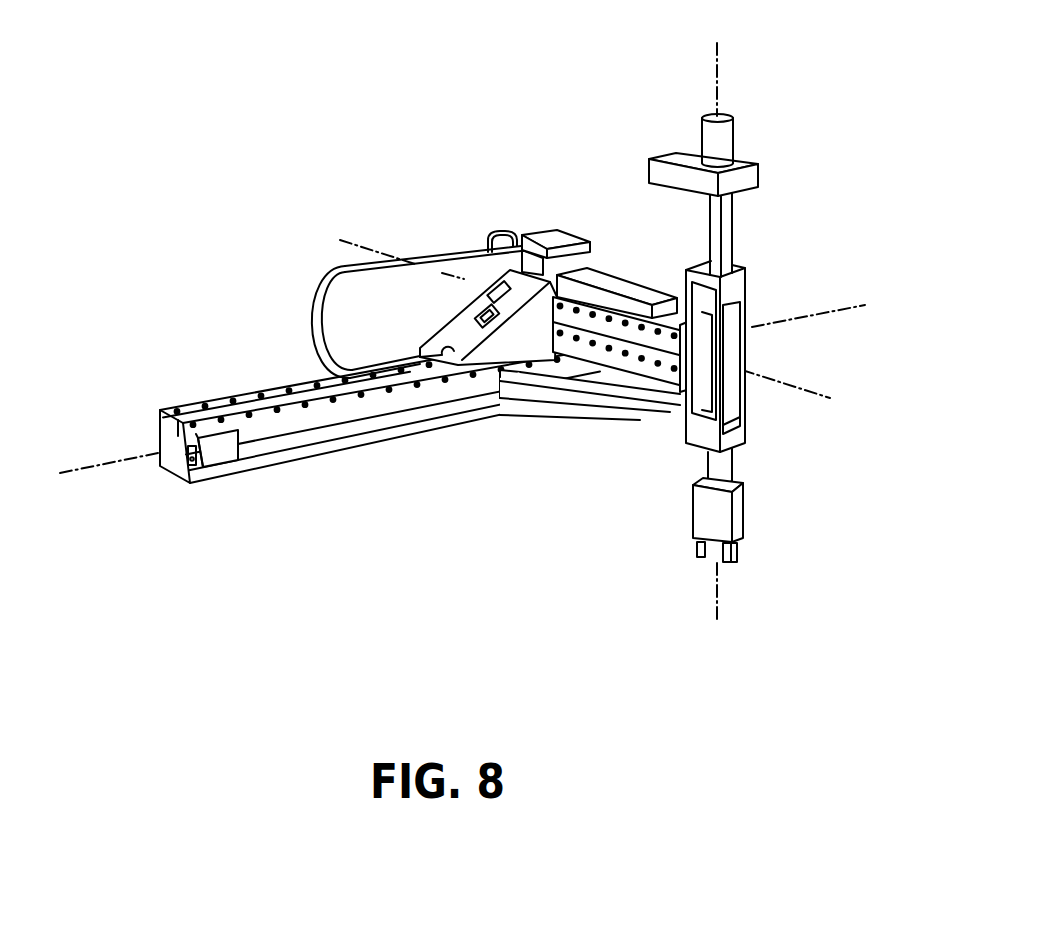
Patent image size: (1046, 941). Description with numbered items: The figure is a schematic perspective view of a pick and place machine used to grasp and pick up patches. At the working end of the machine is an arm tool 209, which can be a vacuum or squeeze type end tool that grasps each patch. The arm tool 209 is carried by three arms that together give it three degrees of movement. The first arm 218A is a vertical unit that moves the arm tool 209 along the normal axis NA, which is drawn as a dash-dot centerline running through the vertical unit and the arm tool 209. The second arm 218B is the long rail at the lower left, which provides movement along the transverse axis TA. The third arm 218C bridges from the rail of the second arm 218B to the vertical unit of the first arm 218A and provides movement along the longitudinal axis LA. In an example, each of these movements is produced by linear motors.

The first arm 218A is at (763, 215).
The second arm 218B is at (231, 371).
The third arm 218C is at (634, 270).
The arm tool 209 is at (763, 535).
The normal axis NA is at (718, 72).
The longitudinal axis LA is at (803, 391).
The transverse axis TA is at (80, 466).